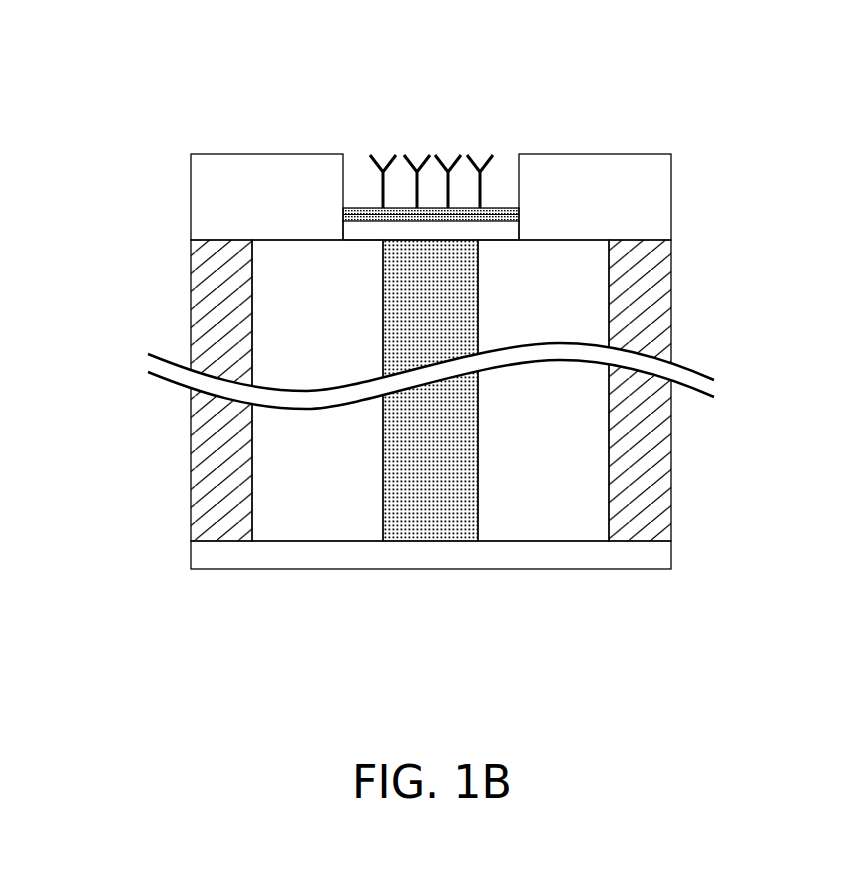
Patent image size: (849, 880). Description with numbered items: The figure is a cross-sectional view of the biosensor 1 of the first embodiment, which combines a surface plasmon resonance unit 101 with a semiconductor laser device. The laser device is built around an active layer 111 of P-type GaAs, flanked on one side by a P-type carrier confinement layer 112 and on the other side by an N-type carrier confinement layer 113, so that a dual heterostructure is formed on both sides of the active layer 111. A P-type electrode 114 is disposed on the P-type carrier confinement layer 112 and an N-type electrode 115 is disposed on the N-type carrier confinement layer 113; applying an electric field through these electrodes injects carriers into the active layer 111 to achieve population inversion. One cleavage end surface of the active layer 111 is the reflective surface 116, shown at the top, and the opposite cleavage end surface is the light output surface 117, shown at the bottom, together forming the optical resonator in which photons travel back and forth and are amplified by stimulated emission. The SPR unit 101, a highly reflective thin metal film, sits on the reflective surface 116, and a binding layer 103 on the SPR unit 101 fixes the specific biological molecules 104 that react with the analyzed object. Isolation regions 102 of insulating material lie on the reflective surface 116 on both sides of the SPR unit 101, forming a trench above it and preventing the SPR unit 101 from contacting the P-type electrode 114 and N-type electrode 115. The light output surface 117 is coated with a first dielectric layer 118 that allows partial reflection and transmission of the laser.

The biosensor 1 is at (36, 50).
The surface plasmon resonance unit 101 is at (362, 230).
The isolation region 102 is at (624, 203).
The binding layer 103 is at (370, 215).
The specific biological molecules 104 is at (451, 167).
The active layer 111 is at (424, 513).
The P-type carrier confinement layer 112 is at (546, 498).
The N-type carrier confinement layer 113 is at (332, 505).
The P-type electrode 114 is at (652, 453).
The N-type electrode 115 is at (212, 492).
The reflective surface 116 is at (473, 221).
The light output surface 117 is at (456, 564).
The first dielectric layer 118 is at (254, 553).